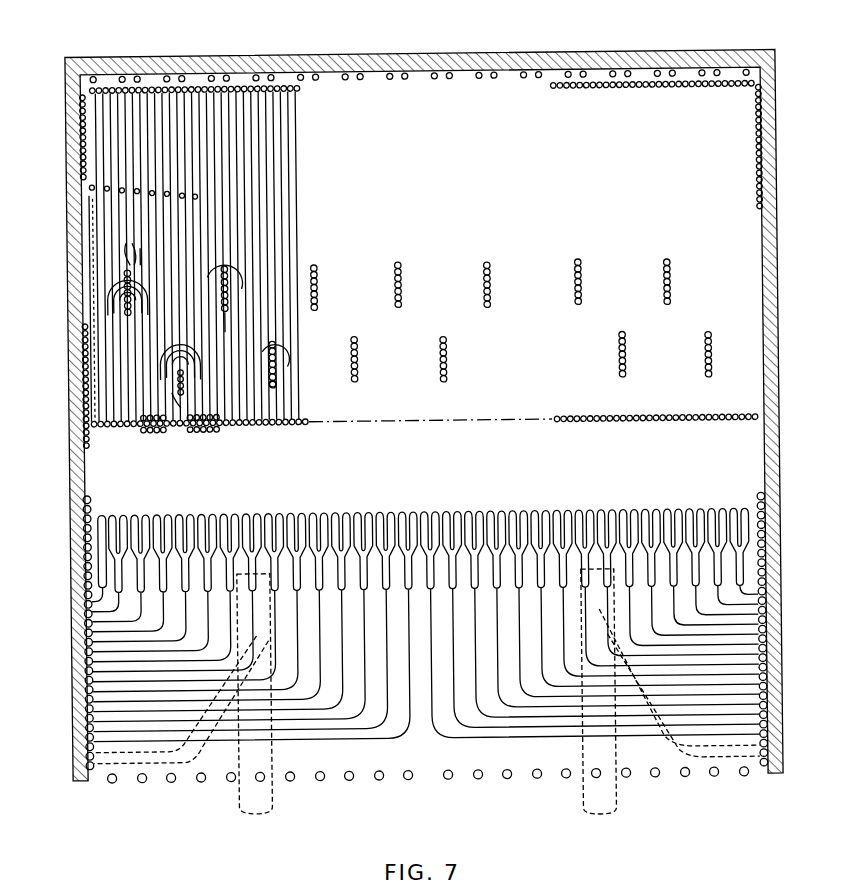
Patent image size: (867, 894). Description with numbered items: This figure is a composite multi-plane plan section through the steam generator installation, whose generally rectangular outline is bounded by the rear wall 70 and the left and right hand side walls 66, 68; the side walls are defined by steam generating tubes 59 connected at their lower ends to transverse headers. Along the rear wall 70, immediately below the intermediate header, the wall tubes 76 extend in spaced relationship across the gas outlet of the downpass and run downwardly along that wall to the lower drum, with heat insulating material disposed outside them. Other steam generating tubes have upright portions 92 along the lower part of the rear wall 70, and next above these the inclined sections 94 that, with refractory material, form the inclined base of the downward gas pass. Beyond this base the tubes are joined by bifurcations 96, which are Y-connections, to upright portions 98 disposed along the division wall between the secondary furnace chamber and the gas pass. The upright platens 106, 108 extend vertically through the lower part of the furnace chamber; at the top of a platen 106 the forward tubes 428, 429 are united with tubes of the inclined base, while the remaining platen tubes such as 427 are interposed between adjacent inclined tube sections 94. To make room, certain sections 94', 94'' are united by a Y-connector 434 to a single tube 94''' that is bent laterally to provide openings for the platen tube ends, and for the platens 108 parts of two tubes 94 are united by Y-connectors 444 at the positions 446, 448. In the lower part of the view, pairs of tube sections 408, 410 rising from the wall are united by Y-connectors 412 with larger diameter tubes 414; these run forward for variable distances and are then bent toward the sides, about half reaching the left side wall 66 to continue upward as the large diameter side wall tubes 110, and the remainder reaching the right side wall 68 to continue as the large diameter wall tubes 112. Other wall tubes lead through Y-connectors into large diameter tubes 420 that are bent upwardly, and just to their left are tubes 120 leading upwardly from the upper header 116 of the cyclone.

The rear wall 70 is at (439, 68).
The wall tubes 76 is at (526, 80).
The upright portions 92 is at (642, 92).
The inclined sections 94 is at (188, 256).
The inclined tube section 94' is at (268, 276).
The inclined tube section 94'' is at (221, 226).
The single tube 94''' is at (114, 370).
The left hand side wall 66 is at (77, 258).
The right hand side wall 68 is at (776, 302).
The steam generating tubes 59 is at (83, 474).
The platens 108 is at (486, 265).
The platens 106 is at (528, 341).
The forward tube of platen 428 is at (278, 376).
The forward tube of platen 429 is at (279, 379).
The Y-connector 434 is at (176, 322).
The platen tube 427 is at (172, 390).
The united tube parts 446 is at (125, 207).
The Y-connectors 444 is at (142, 245).
The united tube parts 448 is at (132, 192).
The bifurcations 96 is at (211, 428).
The upright portions 98 is at (302, 428).
The tube section 408 is at (418, 538).
The tube section 410 is at (413, 513).
The Y-connector 412 is at (518, 546).
The larger diameter tubes 414 is at (410, 592).
The large diameter tubes 420 is at (320, 630).
The upper cyclone header 116 is at (231, 793).
The tubes 120 is at (446, 782).
The large diameter side wall tubes 110 is at (66, 722).
The large diameter wall tubes 112 is at (767, 704).